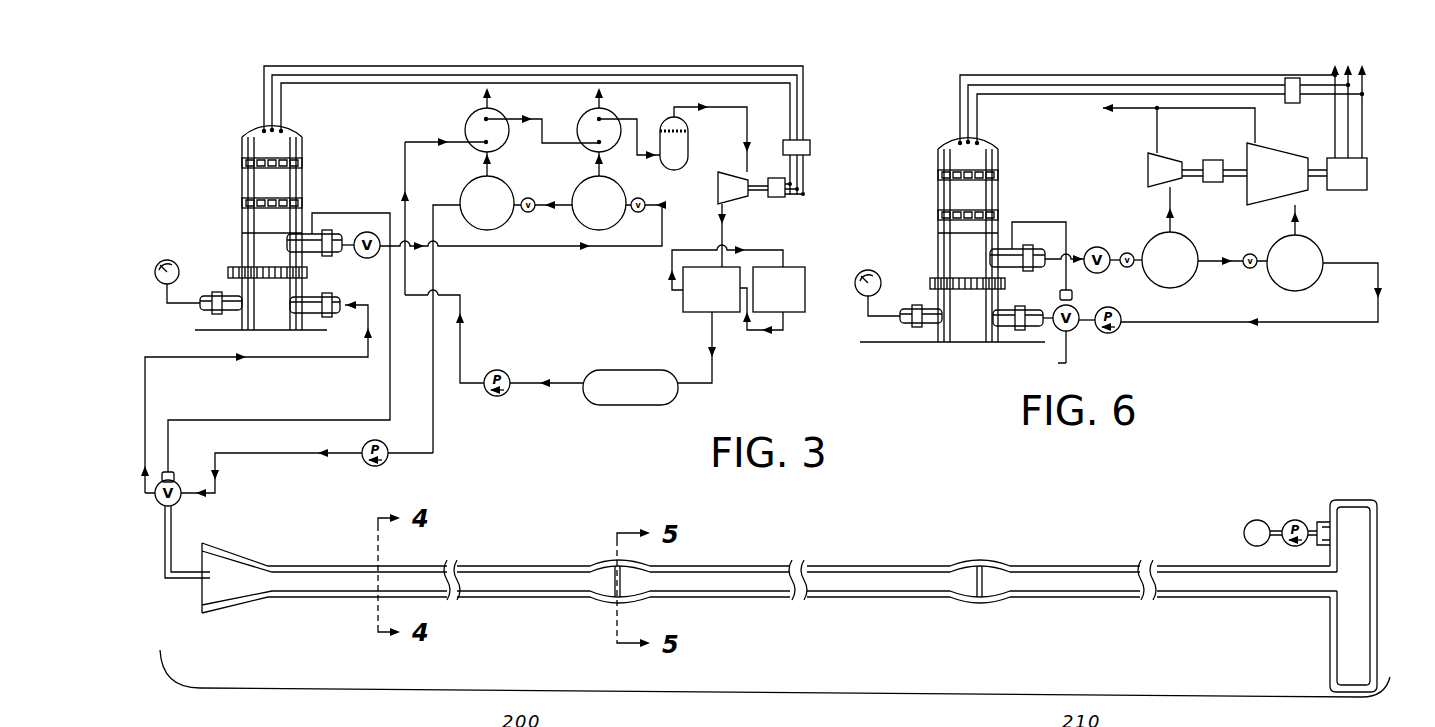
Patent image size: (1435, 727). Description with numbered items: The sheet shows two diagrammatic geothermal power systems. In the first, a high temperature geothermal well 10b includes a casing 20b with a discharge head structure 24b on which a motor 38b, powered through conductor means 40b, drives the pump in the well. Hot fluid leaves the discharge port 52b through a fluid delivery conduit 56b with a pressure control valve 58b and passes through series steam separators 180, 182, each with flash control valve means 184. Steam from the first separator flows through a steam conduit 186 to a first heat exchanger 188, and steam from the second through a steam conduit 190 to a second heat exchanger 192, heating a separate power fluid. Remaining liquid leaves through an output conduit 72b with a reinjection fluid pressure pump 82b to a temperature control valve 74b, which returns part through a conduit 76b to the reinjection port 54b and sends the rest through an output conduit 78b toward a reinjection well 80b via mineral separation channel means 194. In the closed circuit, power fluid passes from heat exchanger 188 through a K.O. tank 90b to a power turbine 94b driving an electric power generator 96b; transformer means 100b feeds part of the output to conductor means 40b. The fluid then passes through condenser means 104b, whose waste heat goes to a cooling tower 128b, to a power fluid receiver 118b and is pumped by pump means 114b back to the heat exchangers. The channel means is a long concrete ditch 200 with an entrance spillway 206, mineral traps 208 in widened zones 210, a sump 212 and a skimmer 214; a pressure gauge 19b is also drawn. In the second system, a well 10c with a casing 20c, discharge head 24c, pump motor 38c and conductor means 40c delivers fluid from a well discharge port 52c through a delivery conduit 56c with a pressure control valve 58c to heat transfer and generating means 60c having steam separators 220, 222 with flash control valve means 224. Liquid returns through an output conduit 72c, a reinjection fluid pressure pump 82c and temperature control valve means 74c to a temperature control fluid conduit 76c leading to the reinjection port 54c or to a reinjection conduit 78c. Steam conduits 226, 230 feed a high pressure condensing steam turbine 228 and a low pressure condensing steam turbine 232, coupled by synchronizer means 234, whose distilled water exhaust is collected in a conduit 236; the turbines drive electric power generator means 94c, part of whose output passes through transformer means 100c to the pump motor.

In FIG. 3, the high temperature geothermal well 10b is at (217, 203).
In FIG. 3, the casing 20b is at (232, 280).
In FIG. 3, the discharge head structure 24b is at (241, 238).
In FIG. 3, the motor 38b is at (287, 187).
In FIG. 3, the conductor means 40b is at (256, 98).
In FIG. 3, the discharge port 52b is at (312, 253).
In FIG. 3, the reinjection port 54b is at (303, 314).
In FIG. 3, the fluid delivery conduit 56b is at (472, 250).
In FIG. 3, the pressure control valve 58b is at (368, 232).
In FIG. 3, the output conduit 72b is at (434, 276).
In FIG. 3, the temperature control valve 74b is at (181, 497).
In FIG. 3, the conduit 76b is at (280, 358).
In FIG. 3, the output conduit 78b is at (173, 525).
In FIG. 3, the reinjection fluid pressure pump 82b is at (386, 466).
In FIG. 3, the K.O. tank 90b is at (690, 152).
In FIG. 3, the power turbine 94b is at (736, 205).
In FIG. 3, the electric power generator 96b is at (779, 201).
In FIG. 3, the transformer means 100b is at (810, 143).
In FIG. 3, the condenser means 104b is at (683, 290).
In FIG. 3, the pump means 114b is at (500, 370).
In FIG. 3, the power fluid receiver 118b is at (638, 370).
In FIG. 3, the cooling tower 128b is at (795, 267).
In FIG. 3, the steam separator 180 is at (626, 182).
In FIG. 3, the steam separator 182 is at (500, 178).
In FIG. 3, the flash control valve means 184 is at (527, 213).
In FIG. 3, the steam conduit 186 is at (601, 176).
In FIG. 3, the first heat exchanger 188 is at (610, 112).
In FIG. 3, the steam conduit 190 is at (489, 158).
In FIG. 3, the second heat exchanger 192 is at (495, 112).
In FIG. 3, the mineral separation channel means 194 is at (822, 692).
In FIG. 3, the long concrete ditch 200 is at (836, 585).
In FIG. 3, the entrance spillway 206 is at (228, 596).
In FIG. 3, the mineral traps 208 is at (613, 598).
In FIG. 3, the widened zone 210 is at (606, 577).
In FIG. 3, the sump 212 is at (1350, 640).
In FIG. 3, the skimmer 214 is at (1322, 545).
In FIG. 3, the pressure gauge 19b is at (1297, 520).
In FIG. 3, the reinjection well 80b is at (1258, 520).
In FIG. 6, the high temperature geothermal well 10c is at (910, 270).
In FIG. 6, the casing 20c is at (937, 337).
In FIG. 6, the discharge head 24c is at (978, 243).
In FIG. 6, the pump motor 38c is at (998, 192).
In FIG. 6, the conductor means 40c is at (957, 101).
In FIG. 6, the well discharge port 52c is at (1010, 269).
In FIG. 6, the reinjection port 54c is at (997, 331).
In FIG. 6, the delivery conduit 56c is at (1064, 250).
In FIG. 6, the pressure control valve 58c is at (1097, 275).
In FIG. 6, the heat transfer and generating means 60c is at (1135, 146).
In FIG. 6, the output conduit 72c is at (1303, 325).
In FIG. 6, the temperature control valve means 74c is at (1076, 335).
In FIG. 6, the temperature control fluid conduit 76c is at (1045, 326).
In FIG. 6, the reinjection conduit 78c is at (1072, 362).
In FIG. 6, the reinjection fluid pressure pump 82c is at (1120, 329).
In FIG. 6, the electric power generator means 94c is at (1362, 158).
In FIG. 6, the transformer means 100c is at (1288, 80).
In FIG. 6, the steam separator 220 is at (1180, 241).
In FIG. 6, the steam separator 222 is at (1315, 243).
In FIG. 6, the flash control valve means 224 is at (1127, 252).
In FIG. 6, the steam conduit 226 is at (1176, 194).
In FIG. 6, the high pressure condensing steam turbine 228 is at (1148, 170).
In FIG. 6, the steam conduit 230 is at (1300, 212).
In FIG. 6, the low pressure condensing steam turbine 232 is at (1292, 140).
In FIG. 6, the synchronizer means 234 is at (1213, 160).
In FIG. 6, the conduit 236 is at (1138, 107).